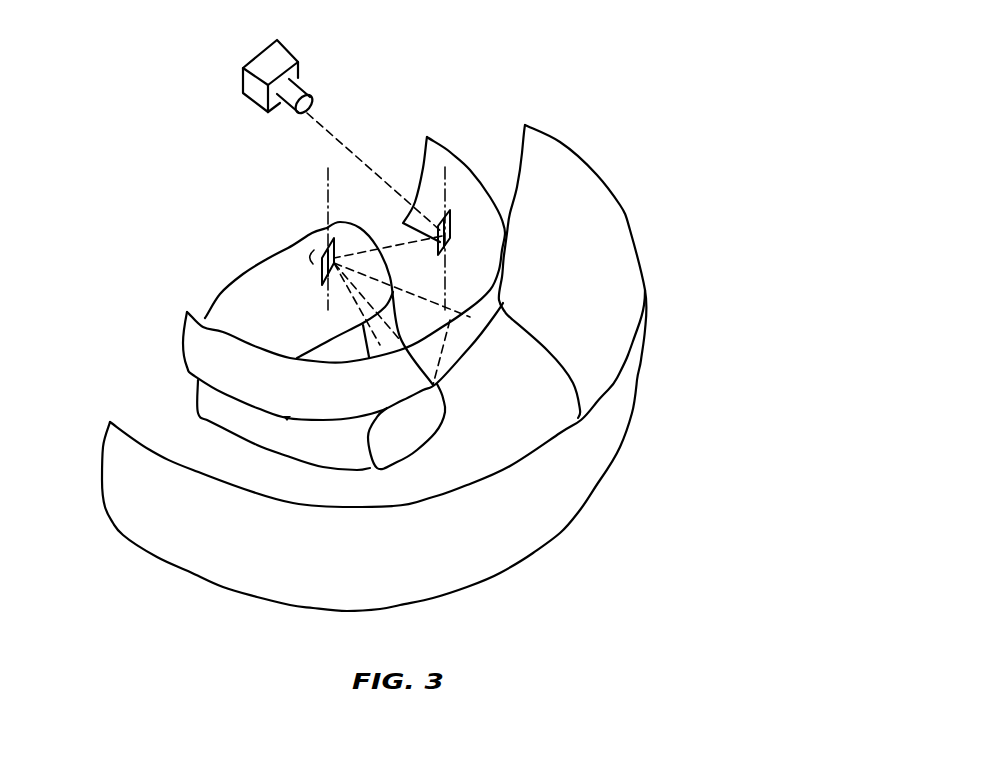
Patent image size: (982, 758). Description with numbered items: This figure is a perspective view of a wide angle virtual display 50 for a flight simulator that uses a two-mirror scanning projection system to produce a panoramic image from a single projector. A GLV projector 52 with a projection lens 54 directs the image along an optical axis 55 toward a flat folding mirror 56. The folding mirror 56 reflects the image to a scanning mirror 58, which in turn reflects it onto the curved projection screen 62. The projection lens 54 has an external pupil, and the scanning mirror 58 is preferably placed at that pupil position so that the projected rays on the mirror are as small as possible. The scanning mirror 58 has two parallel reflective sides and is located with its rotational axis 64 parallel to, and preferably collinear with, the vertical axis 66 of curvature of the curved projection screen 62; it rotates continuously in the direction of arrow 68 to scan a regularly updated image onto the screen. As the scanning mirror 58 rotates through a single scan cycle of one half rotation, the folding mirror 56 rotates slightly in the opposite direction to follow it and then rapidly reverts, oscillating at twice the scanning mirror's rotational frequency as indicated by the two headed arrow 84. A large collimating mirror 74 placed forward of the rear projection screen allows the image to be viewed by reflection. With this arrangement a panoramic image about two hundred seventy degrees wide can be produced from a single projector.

The wide angle virtual display 50 is at (140, 176).
The GLV projector 52 is at (282, 50).
The projection lens 54 is at (301, 96).
The optical axis 55 is at (343, 143).
The folding mirror 56 is at (452, 212).
The scanning mirror 58 is at (323, 230).
The curved projection screen 62 is at (196, 360).
The rotational axis 64 is at (260, 221).
The vertical axis 66 is at (322, 177).
The arrow 68 is at (316, 245).
The collimating mirror 74 is at (577, 310).
The two headed arrow 84 is at (465, 215).